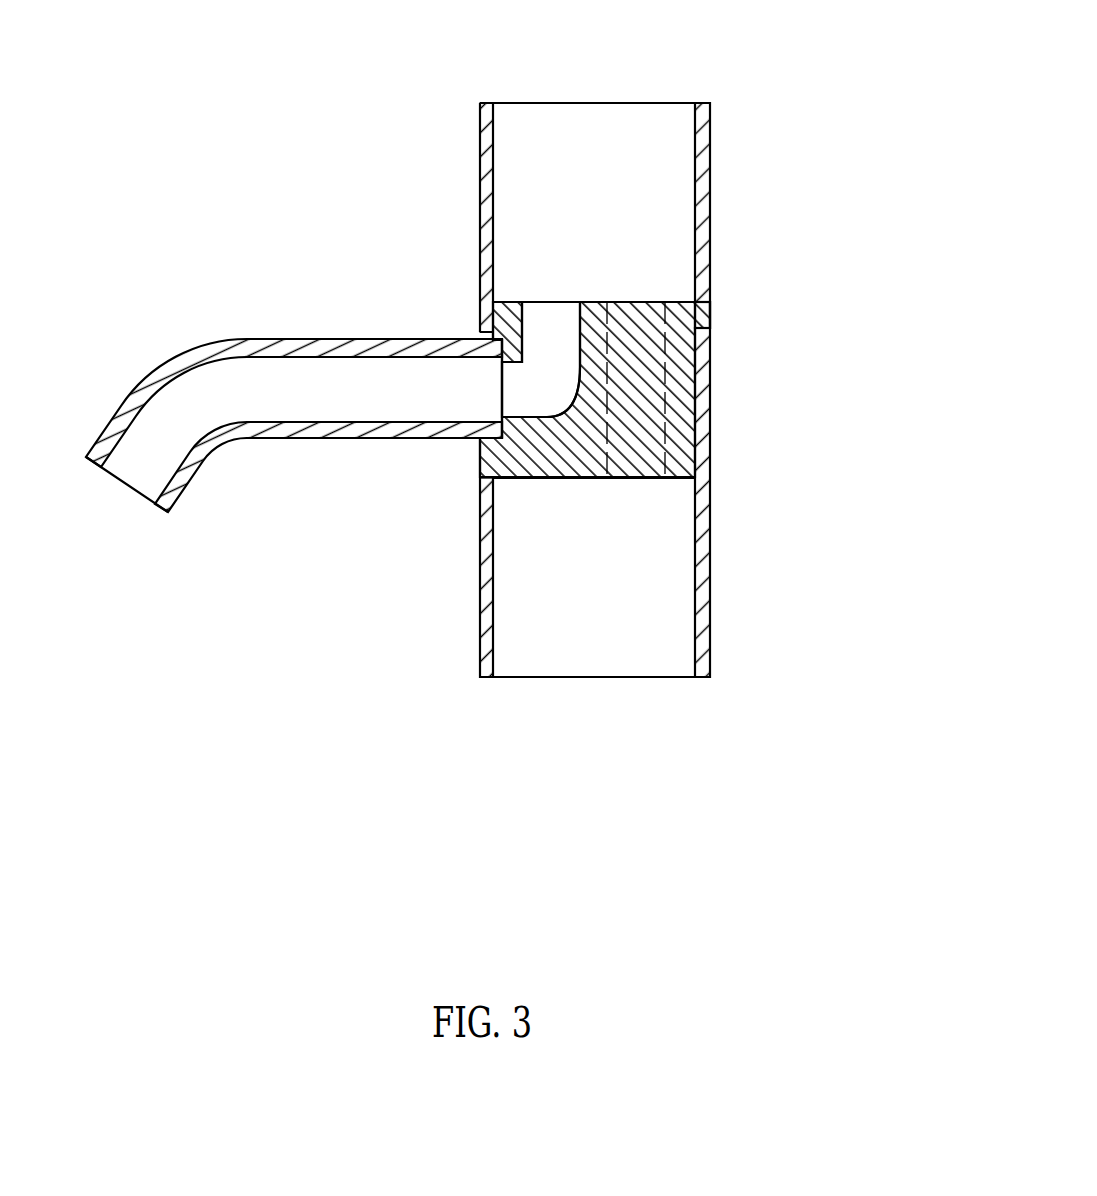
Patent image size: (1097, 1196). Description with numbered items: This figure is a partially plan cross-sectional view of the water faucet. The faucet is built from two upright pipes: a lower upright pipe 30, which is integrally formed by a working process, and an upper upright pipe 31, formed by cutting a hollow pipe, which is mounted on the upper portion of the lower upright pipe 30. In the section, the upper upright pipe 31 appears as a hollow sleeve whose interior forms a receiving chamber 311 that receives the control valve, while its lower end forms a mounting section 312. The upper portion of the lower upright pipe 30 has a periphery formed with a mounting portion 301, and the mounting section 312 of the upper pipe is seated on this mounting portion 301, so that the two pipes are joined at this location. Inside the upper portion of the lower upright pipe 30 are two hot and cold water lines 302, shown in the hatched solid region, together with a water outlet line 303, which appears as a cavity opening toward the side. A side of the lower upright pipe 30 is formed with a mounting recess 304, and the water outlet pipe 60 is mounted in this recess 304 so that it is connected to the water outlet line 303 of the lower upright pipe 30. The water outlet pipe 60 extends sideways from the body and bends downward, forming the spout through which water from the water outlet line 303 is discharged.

The lower upright pipe 30 is at (712, 645).
The upper upright pipe 31 is at (480, 195).
The receiving chamber 311 is at (554, 123).
The mounting section 312 is at (667, 302).
The mounting portion 301 is at (697, 320).
The water lines 302 is at (637, 387).
The water outlet line 303 is at (545, 332).
The mounting recess 304 is at (486, 453).
The water outlet pipe 60 is at (200, 475).